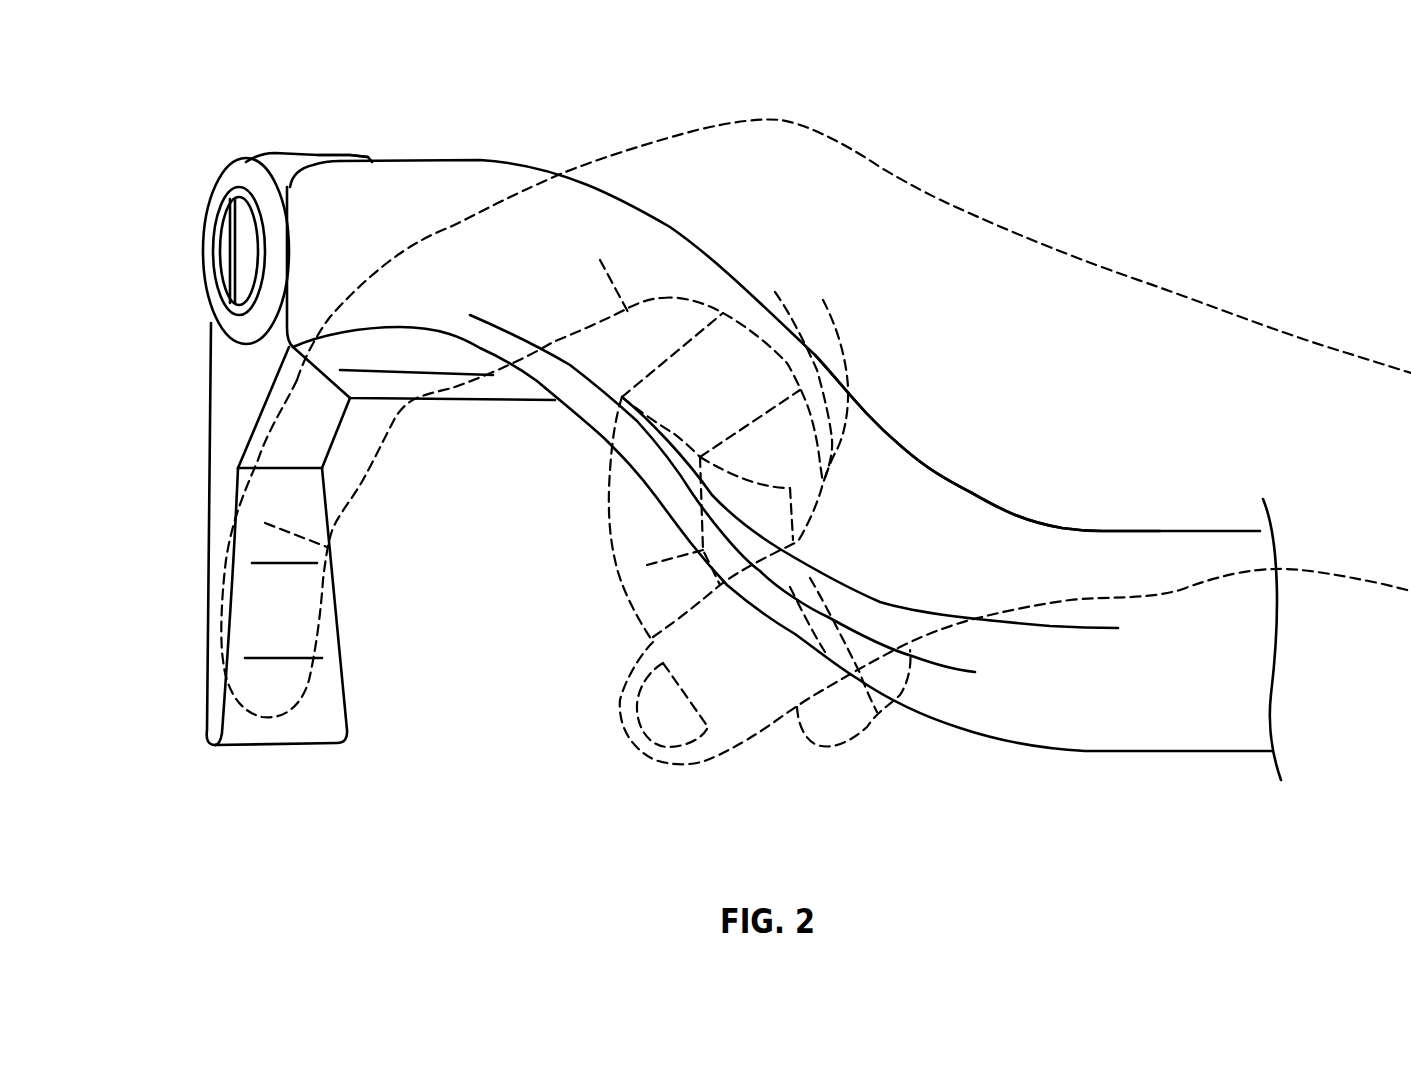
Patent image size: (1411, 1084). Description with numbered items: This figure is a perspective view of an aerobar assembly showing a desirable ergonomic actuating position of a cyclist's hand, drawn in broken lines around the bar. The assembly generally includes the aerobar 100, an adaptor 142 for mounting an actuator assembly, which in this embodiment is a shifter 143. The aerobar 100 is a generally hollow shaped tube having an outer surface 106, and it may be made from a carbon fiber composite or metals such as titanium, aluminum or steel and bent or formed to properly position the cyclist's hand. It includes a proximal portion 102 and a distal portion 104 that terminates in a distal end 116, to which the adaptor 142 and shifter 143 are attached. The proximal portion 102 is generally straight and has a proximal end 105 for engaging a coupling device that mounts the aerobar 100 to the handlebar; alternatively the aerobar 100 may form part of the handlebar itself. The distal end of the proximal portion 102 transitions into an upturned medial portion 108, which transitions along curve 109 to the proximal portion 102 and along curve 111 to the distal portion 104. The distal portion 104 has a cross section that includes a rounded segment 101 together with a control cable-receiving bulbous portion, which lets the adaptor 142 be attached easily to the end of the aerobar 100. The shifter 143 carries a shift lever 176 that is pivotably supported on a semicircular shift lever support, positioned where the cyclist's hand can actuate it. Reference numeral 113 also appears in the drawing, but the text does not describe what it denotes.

The aerobar 100 is at (903, 123).
The rounded segment 101 is at (637, 545).
The proximal portion 102 is at (1166, 762).
The distal portion 104 is at (414, 403).
The proximal end 105 is at (1258, 531).
The outer surface 106 is at (787, 633).
The medial portion 108 is at (822, 358).
The curve 109 is at (1063, 510).
The curve 111 is at (667, 207).
The arm upper surface 113 is at (943, 478).
The distal end 116 is at (353, 158).
The adaptor 142 is at (318, 143).
The shifter 143 is at (200, 190).
The shift lever 176 is at (347, 658).